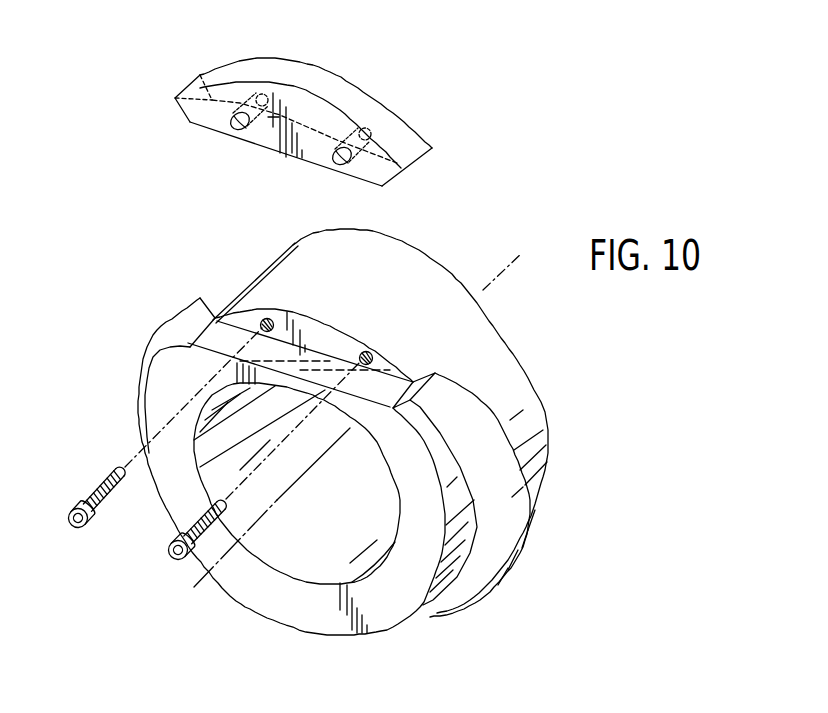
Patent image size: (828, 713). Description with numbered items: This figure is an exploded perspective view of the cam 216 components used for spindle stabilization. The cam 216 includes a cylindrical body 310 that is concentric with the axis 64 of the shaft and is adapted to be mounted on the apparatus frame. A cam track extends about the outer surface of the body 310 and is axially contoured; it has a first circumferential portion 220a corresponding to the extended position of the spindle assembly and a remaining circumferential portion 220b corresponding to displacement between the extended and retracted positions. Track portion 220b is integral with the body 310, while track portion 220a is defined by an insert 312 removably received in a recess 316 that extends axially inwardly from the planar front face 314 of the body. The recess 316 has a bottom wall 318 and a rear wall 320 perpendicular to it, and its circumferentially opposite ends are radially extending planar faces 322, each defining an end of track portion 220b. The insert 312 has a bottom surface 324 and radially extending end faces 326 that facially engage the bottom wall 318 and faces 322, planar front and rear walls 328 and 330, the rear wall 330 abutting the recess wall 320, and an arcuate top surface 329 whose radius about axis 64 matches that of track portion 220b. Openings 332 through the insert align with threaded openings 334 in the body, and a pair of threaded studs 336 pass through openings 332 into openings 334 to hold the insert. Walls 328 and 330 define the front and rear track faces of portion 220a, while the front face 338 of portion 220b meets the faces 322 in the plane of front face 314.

The axis 64 is at (258, 520).
The cam 216 is at (564, 414).
The first circumferential portion of cam track 220a is at (297, 73).
The remaining circumferential portion of cam track 220b is at (138, 356).
The cylindrical body 310 is at (515, 363).
The insert 312 is at (313, 111).
The planar front face 314 is at (153, 420).
The recess 316 is at (247, 322).
The bottom wall 318 is at (377, 401).
The rear wall 320 is at (323, 334).
The radially extending planar faces 322 is at (188, 322).
The bottom surface 324 is at (382, 186).
The radially extending end faces 326 is at (175, 100).
The planar front wall 328 is at (230, 95).
The arcuate top surface 329 is at (253, 62).
The planar rear wall 330 is at (407, 123).
The openings 332 is at (238, 131).
The threaded openings 334 is at (267, 318).
The threaded studs 336 is at (173, 535).
The front face of track portion 338 is at (163, 347).